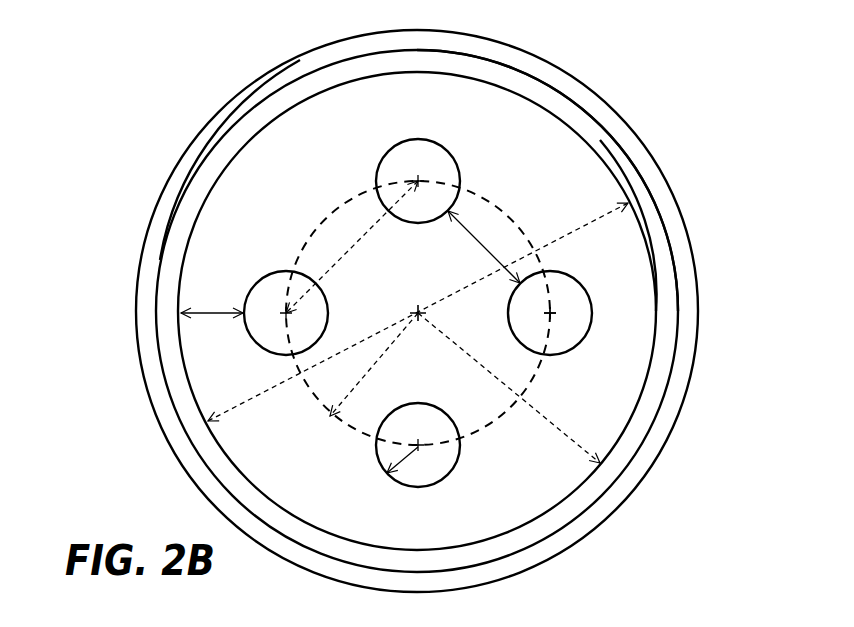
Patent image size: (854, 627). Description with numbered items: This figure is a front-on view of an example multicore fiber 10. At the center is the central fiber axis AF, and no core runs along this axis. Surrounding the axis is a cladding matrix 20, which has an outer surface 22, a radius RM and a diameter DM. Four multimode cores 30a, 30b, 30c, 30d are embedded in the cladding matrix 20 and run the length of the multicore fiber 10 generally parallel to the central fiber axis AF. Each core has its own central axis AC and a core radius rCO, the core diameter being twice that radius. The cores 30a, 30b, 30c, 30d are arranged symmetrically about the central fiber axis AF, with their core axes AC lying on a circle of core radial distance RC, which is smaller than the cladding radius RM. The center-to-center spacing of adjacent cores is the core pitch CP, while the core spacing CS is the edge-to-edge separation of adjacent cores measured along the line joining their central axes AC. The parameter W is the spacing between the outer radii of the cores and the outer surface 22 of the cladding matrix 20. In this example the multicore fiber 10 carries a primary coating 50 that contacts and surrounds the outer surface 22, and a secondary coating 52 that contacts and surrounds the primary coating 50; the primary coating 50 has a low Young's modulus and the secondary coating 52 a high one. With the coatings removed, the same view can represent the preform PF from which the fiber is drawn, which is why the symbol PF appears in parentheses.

The multicore fiber 10 is at (243, 72).
The preform PF is at (247, 135).
The coating 50 is at (523, 83).
The secondary coating 52 is at (570, 88).
The cladding matrix 20 is at (543, 143).
The outer surface 22 is at (646, 235).
The core pitch CP is at (357, 242).
The multimode core 30a is at (431, 142).
The multimode core 30b is at (571, 277).
The multimode core 30c is at (428, 487).
The multimode core 30d is at (270, 273).
The central fiber axis AF is at (418, 310).
The cladding matrix diameter DM is at (577, 231).
The cladding matrix radius RM is at (509, 388).
The core radial distance RC is at (374, 364).
The core spacing CS is at (483, 246).
The core central axis AC is at (551, 316).
The spacing W is at (212, 332).
The core radius rCO is at (398, 462).